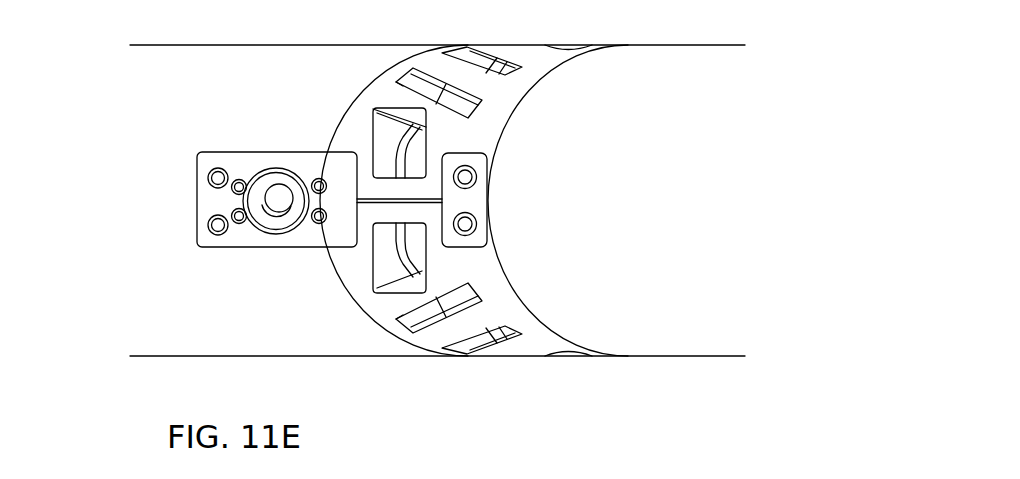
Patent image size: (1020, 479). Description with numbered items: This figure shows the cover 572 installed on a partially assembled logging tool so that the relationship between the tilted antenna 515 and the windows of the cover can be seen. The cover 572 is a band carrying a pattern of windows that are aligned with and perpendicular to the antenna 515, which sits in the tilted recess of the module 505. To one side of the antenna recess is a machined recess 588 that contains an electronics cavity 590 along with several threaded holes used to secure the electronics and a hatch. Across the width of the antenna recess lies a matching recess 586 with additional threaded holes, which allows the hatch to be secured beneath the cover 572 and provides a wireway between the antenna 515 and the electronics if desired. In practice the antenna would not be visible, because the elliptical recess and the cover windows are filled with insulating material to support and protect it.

The module 505 is at (223, 45).
The tilted antenna 515 is at (397, 142).
The cover 572 is at (411, 356).
The matching recess 586 is at (487, 217).
The machined recess 588 is at (268, 248).
The electronics cavity 590 is at (277, 187).